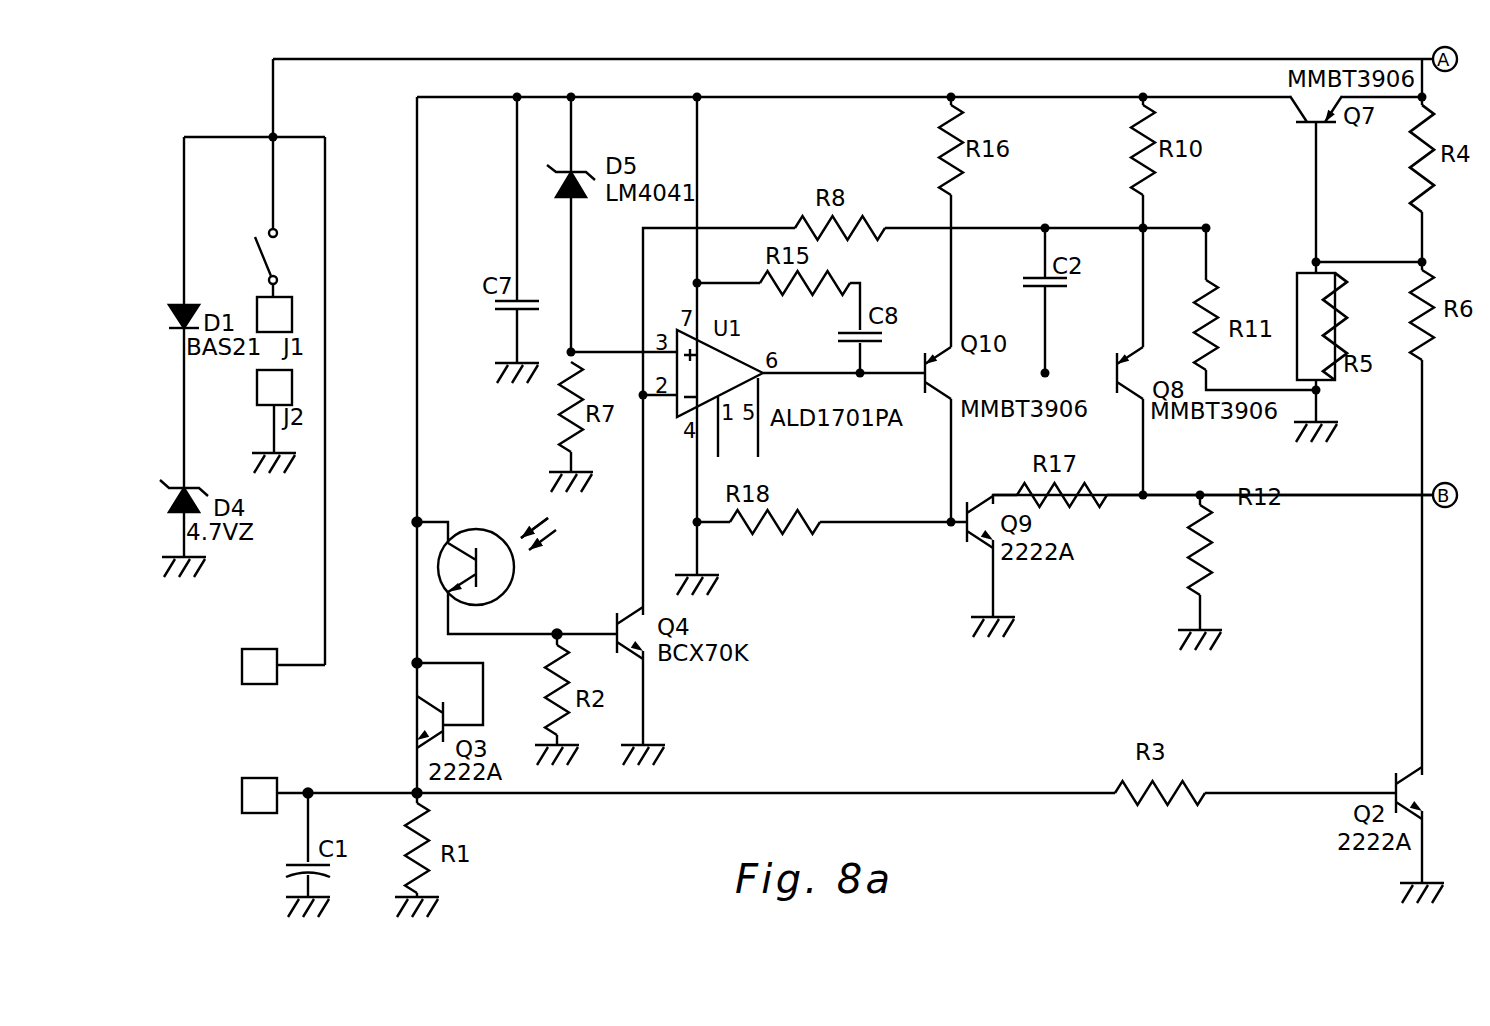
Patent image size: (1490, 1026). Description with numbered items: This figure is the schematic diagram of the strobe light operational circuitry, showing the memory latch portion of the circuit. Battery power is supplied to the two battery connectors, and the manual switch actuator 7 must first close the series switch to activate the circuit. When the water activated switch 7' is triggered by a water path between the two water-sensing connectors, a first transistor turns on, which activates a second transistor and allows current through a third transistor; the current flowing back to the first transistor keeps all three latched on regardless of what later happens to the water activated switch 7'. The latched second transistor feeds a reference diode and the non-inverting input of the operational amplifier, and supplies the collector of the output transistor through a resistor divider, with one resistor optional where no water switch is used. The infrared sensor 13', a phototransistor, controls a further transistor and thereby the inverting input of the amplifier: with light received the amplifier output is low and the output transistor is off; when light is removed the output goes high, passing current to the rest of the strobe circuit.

The switch actuator 7 is at (254, 217).
The water activated switch 7' is at (260, 745).
The infrared sensor 13' is at (515, 518).